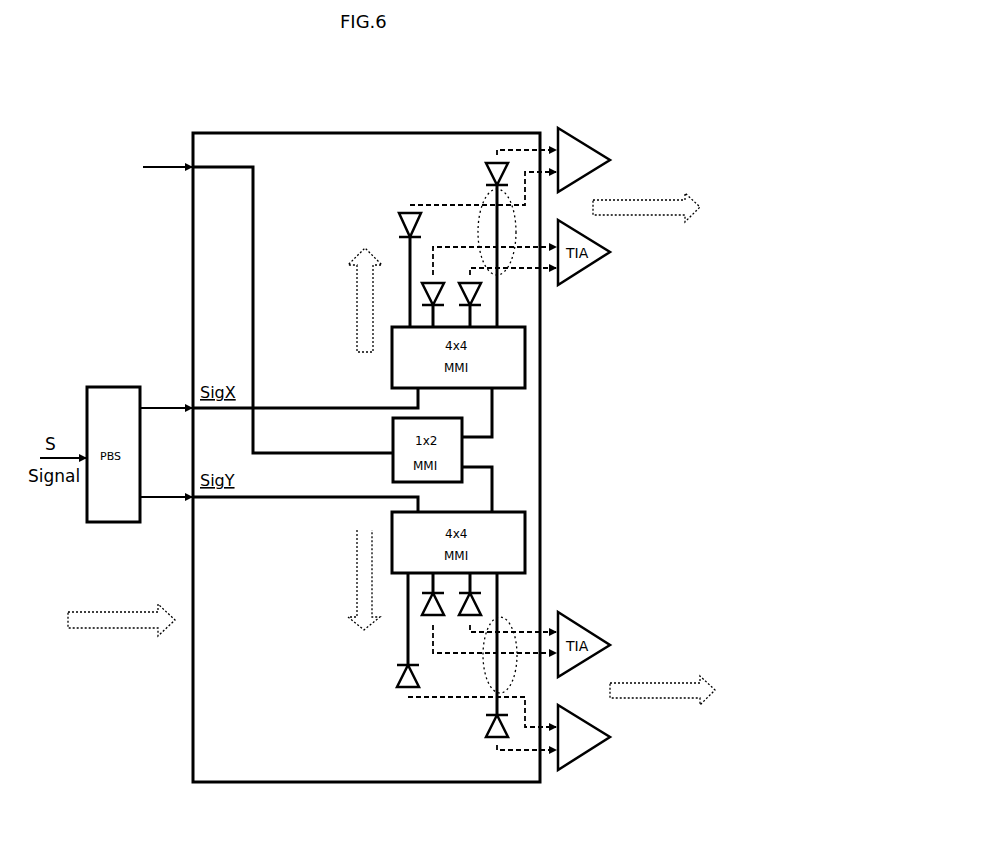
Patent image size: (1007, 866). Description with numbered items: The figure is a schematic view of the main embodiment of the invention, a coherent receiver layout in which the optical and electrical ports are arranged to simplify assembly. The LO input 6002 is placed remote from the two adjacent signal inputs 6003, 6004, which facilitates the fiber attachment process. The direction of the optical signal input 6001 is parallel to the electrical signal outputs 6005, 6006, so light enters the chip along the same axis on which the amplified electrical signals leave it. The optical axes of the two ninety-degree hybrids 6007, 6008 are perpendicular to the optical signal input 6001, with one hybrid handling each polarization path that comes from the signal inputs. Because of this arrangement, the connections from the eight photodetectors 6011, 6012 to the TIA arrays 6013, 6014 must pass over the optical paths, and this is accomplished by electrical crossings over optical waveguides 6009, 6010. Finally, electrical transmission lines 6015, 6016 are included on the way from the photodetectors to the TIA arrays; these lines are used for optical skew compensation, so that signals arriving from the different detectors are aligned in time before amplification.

The optical signal input 6001 is at (102, 612).
The LO input 6002 is at (150, 172).
The signal input 6003 is at (155, 392).
The signal input 6004 is at (157, 500).
The electrical signal output 6005 is at (643, 227).
The electrical signal output 6006 is at (655, 665).
The 90° hybrid 6007 is at (350, 330).
The 90° hybrid 6008 is at (362, 640).
The electrical crossing over optical waveguides 6009 is at (510, 252).
The electrical crossing over optical waveguides 6010 is at (508, 622).
The photodetector 6011 is at (405, 205).
The photodetector 6012 is at (480, 730).
The TIA array 6013 is at (560, 128).
The TIA array 6014 is at (607, 747).
The electrical transmission line 6015 is at (447, 197).
The electrical transmission line 6016 is at (425, 700).